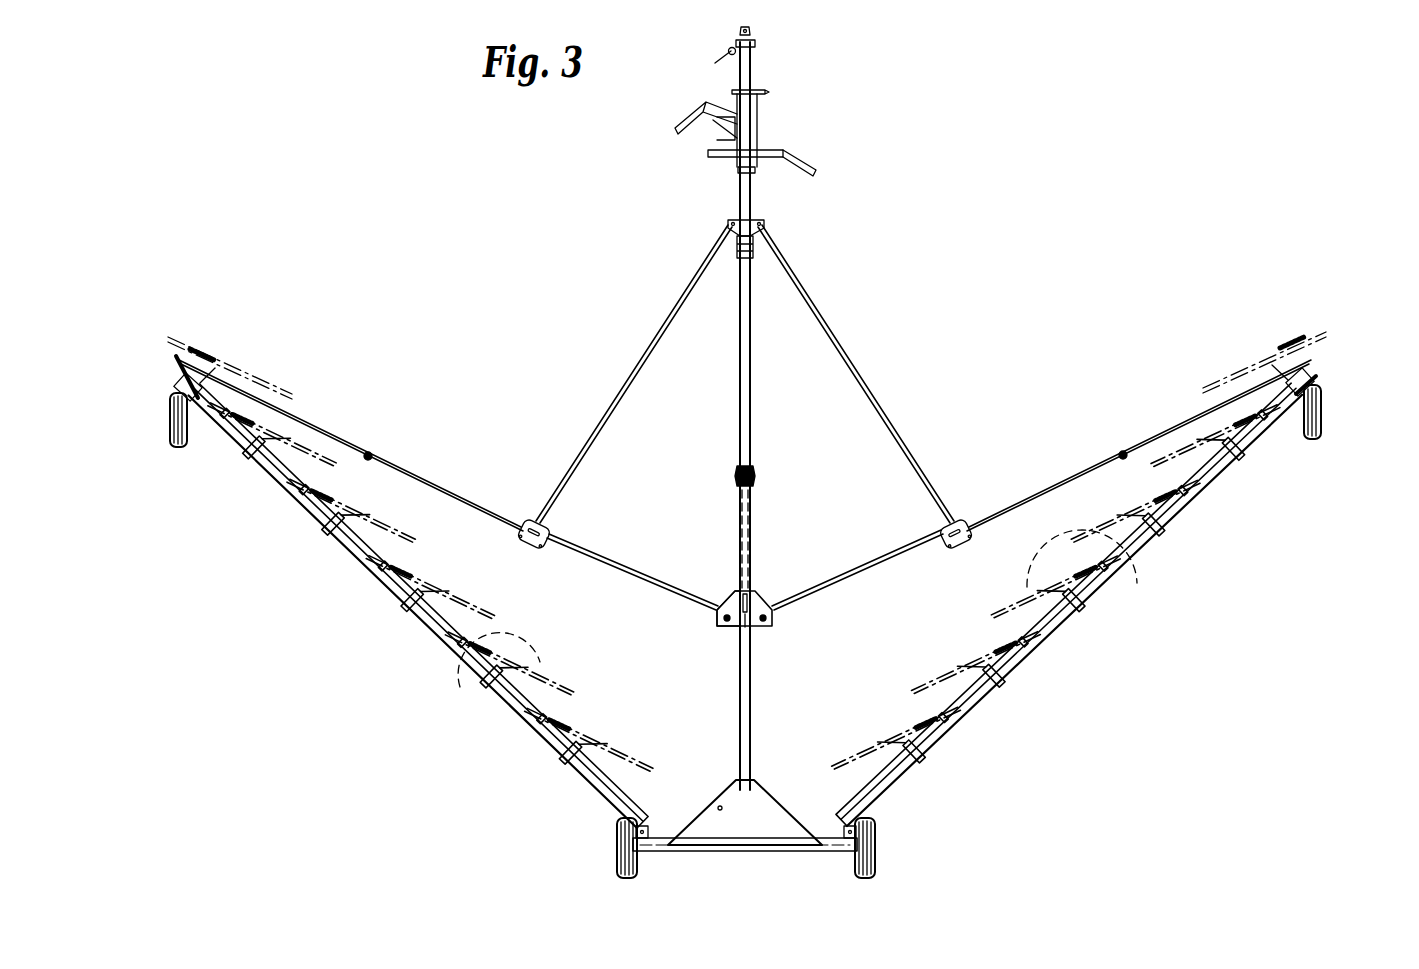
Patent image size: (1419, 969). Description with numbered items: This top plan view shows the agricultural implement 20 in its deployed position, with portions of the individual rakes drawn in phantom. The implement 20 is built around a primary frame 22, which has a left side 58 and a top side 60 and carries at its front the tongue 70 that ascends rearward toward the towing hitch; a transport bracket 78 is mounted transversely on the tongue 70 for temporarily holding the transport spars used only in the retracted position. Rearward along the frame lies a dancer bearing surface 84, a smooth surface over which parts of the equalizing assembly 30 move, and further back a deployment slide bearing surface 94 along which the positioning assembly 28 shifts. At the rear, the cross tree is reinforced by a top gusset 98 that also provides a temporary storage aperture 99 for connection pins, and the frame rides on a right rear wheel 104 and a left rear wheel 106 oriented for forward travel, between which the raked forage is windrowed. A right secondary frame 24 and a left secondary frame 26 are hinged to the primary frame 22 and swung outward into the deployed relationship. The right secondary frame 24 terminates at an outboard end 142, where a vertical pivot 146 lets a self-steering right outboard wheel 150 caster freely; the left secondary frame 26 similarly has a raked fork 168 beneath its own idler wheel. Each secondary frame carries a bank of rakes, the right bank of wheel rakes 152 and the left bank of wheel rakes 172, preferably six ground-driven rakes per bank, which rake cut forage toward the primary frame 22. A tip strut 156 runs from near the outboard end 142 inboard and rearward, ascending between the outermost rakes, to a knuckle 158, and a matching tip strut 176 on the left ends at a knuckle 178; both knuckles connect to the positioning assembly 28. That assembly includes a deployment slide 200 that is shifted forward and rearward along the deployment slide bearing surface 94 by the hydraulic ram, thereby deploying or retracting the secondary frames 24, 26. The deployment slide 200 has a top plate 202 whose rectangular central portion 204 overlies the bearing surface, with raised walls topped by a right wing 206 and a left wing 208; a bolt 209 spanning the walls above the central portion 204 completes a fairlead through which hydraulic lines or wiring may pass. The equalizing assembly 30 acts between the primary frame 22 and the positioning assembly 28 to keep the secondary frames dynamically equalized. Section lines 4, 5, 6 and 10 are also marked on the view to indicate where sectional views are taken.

The section line 4- 4 is at (640, 160).
The section line 5- 5 is at (668, 318).
The section line 6- 6 is at (447, 514).
The section line 10- 10 is at (912, 870).
The agricultural implement 20 is at (922, 339).
The primary frame 22 is at (754, 452).
The right secondary frame 24 is at (1204, 511).
The left secondary frame 26 is at (382, 600).
The positioning assembly 28 is at (889, 566).
The equalizing assembly 30 is at (820, 303).
The left side 58 is at (740, 436).
The top side 60 is at (740, 385).
The tongue 70 is at (750, 205).
The transport bracket 78 is at (720, 160).
The dancer bearing surface 84 is at (752, 262).
The deployment slide bearing surface 94 is at (750, 690).
The top gusset 98 is at (766, 826).
The temporary storage aperture 99 is at (718, 806).
The right rear wheel 104 is at (856, 868).
The left rear wheel 106 is at (640, 868).
The outboard end 142 is at (1310, 376).
The vertical pivot 146 is at (1320, 410).
The right outboard wheel 150 is at (1322, 433).
The right bank of wheel rakes 152 is at (1100, 580).
The tip strut 156 is at (1178, 420).
The knuckle 158 is at (1121, 453).
The raked fork 168 is at (192, 432).
The left bank of wheel rakes 172 is at (470, 686).
The tip strut 176 is at (293, 420).
The knuckle 178 is at (370, 455).
The deployment slide 200 is at (760, 600).
The top plate 202 is at (727, 627).
The rectangular central portion 204 is at (743, 628).
The right wing 206 is at (775, 621).
The left wing 208 is at (728, 605).
The bolt 209 is at (737, 590).